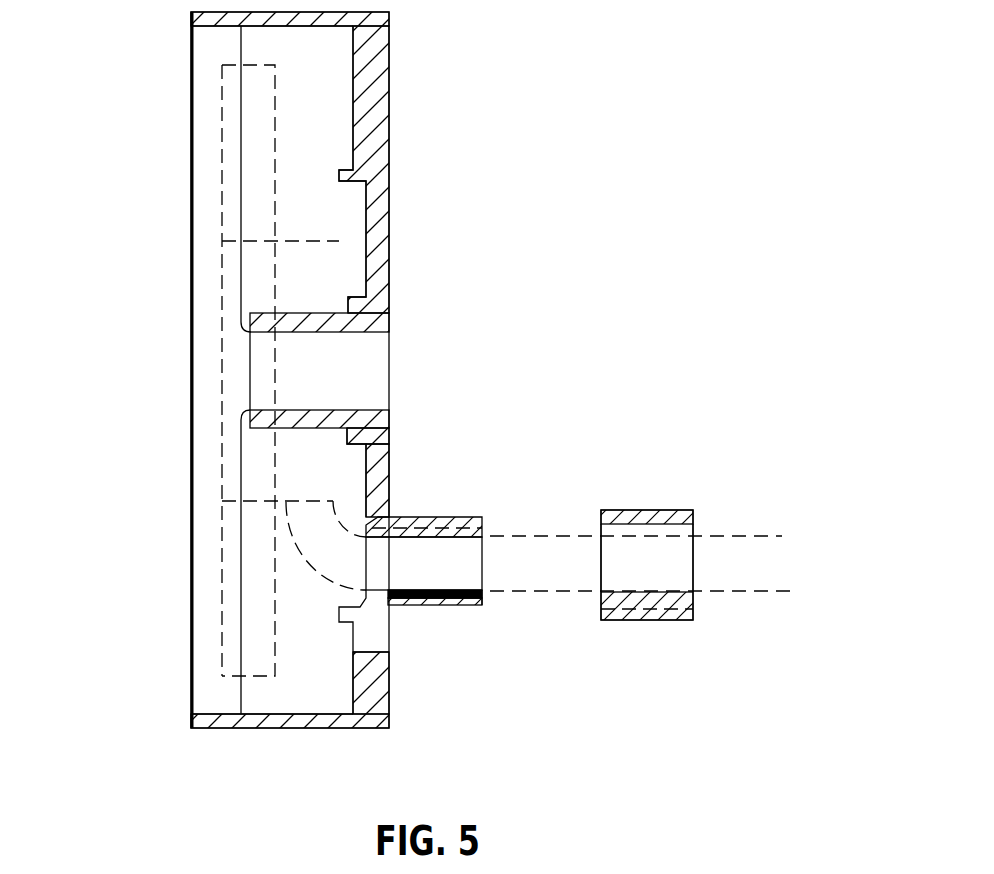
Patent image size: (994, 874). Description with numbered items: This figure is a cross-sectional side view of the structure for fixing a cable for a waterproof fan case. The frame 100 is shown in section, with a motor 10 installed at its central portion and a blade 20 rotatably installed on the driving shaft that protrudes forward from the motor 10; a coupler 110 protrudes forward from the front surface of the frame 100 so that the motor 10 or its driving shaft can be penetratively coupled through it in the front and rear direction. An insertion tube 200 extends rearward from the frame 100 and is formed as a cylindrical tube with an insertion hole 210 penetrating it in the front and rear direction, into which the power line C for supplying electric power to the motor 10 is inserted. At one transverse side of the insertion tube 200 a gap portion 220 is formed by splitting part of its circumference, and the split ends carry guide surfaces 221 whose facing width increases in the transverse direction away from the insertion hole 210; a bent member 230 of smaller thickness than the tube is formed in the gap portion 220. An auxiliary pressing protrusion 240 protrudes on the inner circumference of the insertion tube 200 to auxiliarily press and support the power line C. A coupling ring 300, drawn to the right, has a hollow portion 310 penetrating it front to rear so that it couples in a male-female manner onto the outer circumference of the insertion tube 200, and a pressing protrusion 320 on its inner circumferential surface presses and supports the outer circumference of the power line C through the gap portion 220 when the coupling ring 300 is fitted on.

The frame 100 is at (372, 102).
The coupler 110 is at (250, 312).
The motor 10 is at (305, 238).
The blade 20 is at (222, 562).
The auxiliary pressing protrusion 240 is at (400, 515).
The insertion tube 200 is at (445, 537).
The insertion hole 210 is at (450, 548).
The power line C is at (733, 552).
The guide surface 221 is at (460, 603).
The gap portion 220 is at (403, 603).
The bent member 230 is at (430, 603).
The coupling ring 300 is at (645, 512).
The pressing protrusion 320 is at (678, 598).
The hollow portion 310 is at (646, 554).